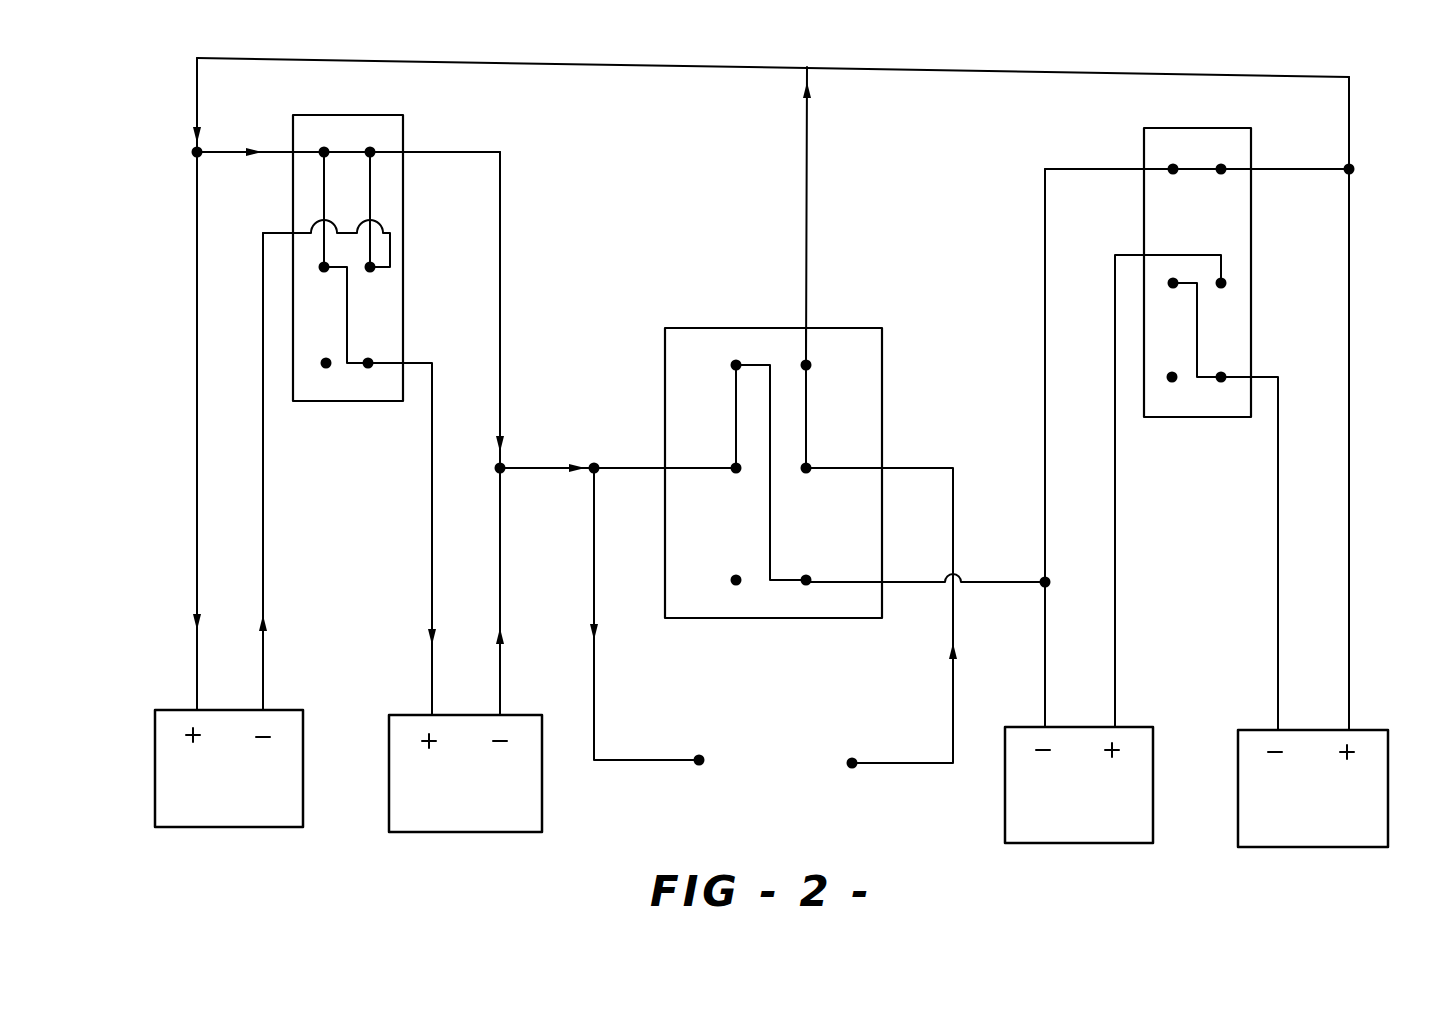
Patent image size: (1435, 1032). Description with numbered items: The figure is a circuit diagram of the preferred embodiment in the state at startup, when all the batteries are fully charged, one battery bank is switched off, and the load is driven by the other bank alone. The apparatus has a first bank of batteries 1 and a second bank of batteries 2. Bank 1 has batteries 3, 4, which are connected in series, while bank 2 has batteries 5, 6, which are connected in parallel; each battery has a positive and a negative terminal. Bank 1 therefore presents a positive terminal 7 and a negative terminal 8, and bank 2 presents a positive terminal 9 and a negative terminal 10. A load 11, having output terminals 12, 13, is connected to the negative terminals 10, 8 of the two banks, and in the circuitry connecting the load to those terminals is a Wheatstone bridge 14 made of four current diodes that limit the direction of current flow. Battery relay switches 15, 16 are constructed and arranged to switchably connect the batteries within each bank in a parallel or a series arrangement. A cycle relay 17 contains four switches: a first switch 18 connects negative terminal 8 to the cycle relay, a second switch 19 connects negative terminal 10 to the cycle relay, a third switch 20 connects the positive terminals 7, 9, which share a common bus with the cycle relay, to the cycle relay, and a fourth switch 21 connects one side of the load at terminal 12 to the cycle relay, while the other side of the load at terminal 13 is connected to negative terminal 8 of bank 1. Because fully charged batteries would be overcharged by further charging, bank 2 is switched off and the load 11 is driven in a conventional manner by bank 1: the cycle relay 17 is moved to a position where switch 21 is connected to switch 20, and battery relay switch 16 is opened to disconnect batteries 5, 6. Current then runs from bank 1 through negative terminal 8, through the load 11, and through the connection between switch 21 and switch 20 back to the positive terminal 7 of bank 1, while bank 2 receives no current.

The first bank of batteries 1 is at (343, 806).
The second bank of batteries 2 is at (1215, 824).
The battery 3 is at (155, 770).
The battery 4 is at (542, 778).
The battery 5 is at (1153, 792).
The battery 6 is at (1388, 797).
The positive terminal 7 is at (197, 152).
The negative terminal 8 is at (505, 470).
The positive terminal 9 is at (1349, 169).
The negative terminal 10 is at (1045, 582).
The load 11 is at (800, 803).
The output terminal 12 is at (852, 766).
The output terminal 13 is at (696, 768).
The Wheatstone bridge 14 is at (795, 714).
The battery relay switch 15 is at (358, 115).
The battery relay switch 16 is at (1210, 128).
The cycle relay 17 is at (853, 328).
The first switch 18 is at (665, 468).
The second switch 19 is at (882, 585).
The third switch 20 is at (805, 328).
The fourth switch 21 is at (882, 470).